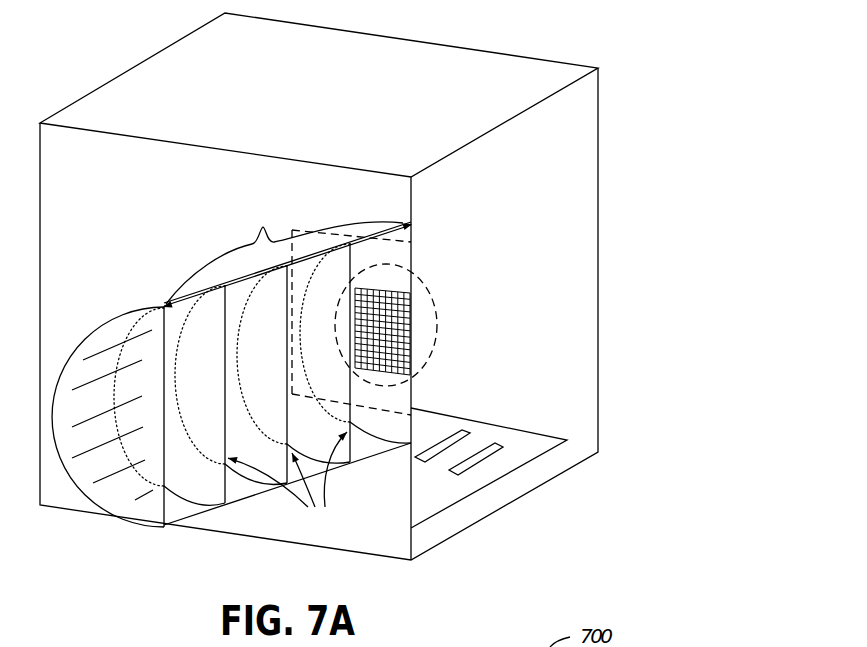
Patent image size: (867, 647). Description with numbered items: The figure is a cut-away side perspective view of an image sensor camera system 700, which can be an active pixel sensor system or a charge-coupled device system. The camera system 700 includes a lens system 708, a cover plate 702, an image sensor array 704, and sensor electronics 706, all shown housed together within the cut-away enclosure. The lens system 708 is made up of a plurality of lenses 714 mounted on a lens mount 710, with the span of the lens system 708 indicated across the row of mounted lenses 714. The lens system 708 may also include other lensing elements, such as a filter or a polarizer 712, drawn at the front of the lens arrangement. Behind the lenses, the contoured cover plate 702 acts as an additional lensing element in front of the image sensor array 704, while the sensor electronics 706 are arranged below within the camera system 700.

The image sensor camera system 700 is at (618, 60).
The cover plate 702 is at (383, 250).
The image sensor array 704 is at (398, 322).
The sensor electronics 706 is at (535, 445).
The lens system 708 is at (287, 253).
The lens mount 710 is at (178, 505).
The filter or polarizer 712 is at (132, 510).
The lenses 714 is at (287, 482).